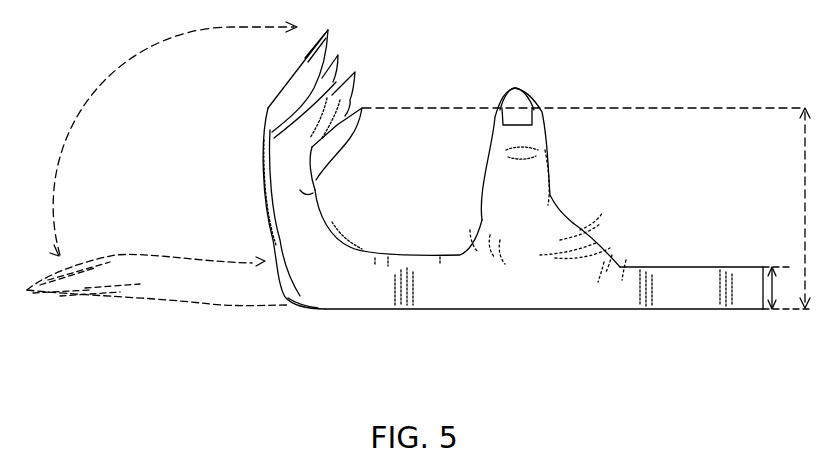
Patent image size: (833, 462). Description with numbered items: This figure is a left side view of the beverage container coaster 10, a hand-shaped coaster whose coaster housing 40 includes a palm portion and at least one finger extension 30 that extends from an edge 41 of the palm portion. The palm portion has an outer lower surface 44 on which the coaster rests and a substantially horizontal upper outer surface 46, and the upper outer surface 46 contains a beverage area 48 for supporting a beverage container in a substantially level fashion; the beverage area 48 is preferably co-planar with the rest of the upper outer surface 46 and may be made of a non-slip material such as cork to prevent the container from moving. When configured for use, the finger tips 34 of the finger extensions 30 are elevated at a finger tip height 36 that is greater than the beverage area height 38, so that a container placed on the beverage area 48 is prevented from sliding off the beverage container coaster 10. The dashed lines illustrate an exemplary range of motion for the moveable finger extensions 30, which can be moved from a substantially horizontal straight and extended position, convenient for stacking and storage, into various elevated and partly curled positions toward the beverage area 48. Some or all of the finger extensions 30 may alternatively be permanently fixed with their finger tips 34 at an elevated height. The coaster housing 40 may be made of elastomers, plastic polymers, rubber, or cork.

The beverage container coaster 10 is at (594, 89).
The finger extension 30 is at (261, 143).
The finger tip 34 is at (362, 127).
The finger tip height 36 is at (787, 208).
The beverage area height 38 is at (783, 288).
The coaster housing 40 is at (352, 293).
The edge of palm portion 41 is at (675, 298).
The outer lower surface 44 is at (443, 311).
The upper outer surface 46 is at (404, 255).
The beverage area 48 is at (617, 265).